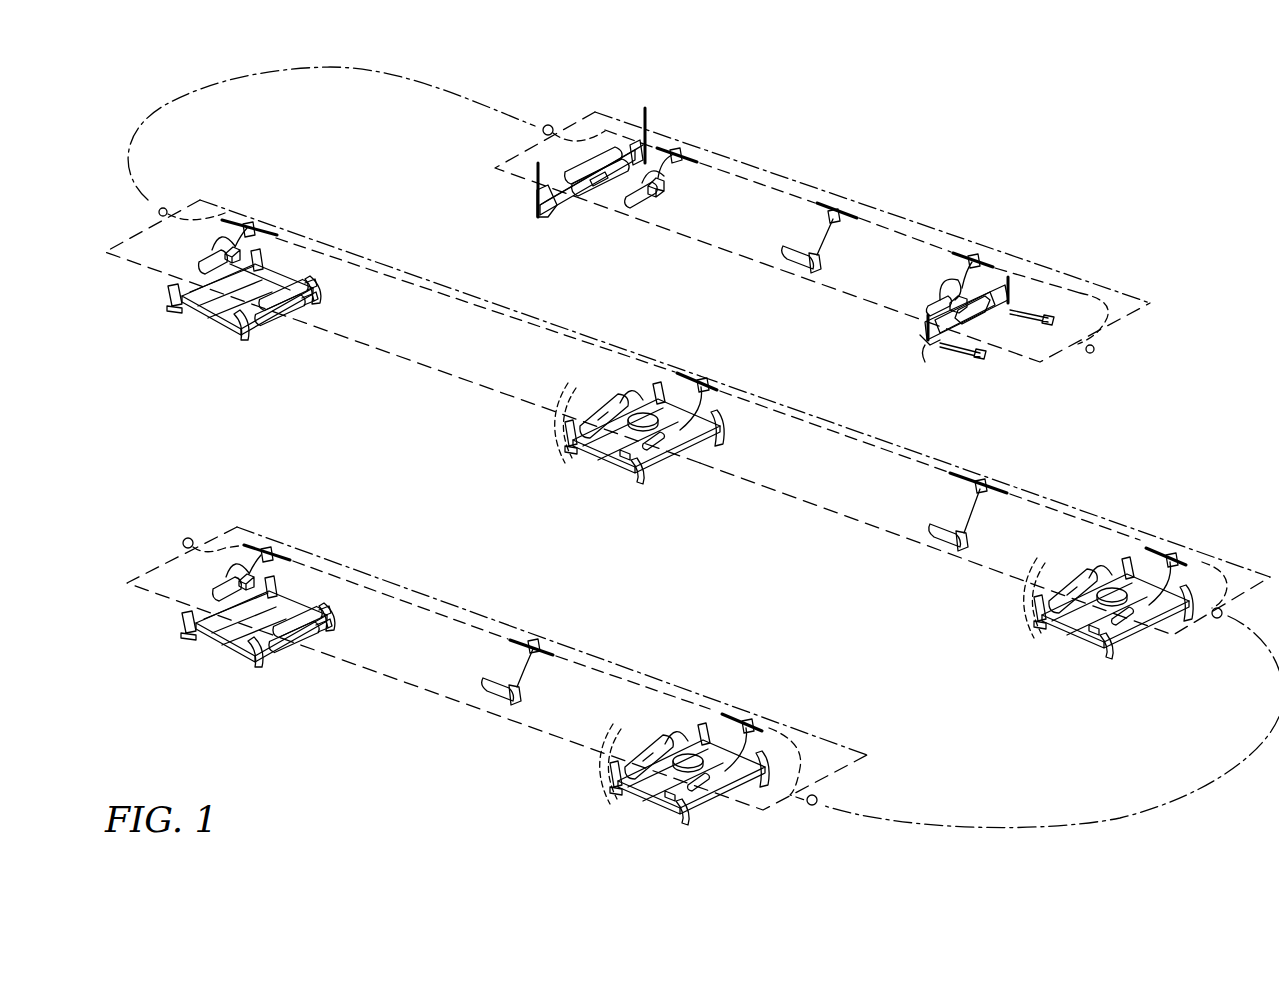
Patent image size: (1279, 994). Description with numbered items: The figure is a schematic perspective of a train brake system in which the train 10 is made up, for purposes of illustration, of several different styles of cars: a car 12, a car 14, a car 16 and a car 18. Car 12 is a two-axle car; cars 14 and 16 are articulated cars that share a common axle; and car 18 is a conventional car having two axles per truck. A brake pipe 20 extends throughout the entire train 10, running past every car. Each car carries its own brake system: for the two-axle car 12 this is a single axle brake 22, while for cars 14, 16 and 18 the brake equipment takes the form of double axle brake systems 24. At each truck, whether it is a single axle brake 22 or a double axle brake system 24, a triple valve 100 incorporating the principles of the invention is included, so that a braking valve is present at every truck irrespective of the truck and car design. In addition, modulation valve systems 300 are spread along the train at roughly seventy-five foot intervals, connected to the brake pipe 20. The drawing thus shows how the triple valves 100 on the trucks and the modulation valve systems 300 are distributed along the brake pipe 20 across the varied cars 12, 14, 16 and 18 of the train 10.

The train 10 is at (1020, 191).
The car 12 is at (733, 253).
The car 14 is at (573, 330).
The car 16 is at (810, 412).
The car 18 is at (600, 655).
The brake pipe 20 is at (150, 107).
The single axle brake 22 is at (538, 213).
The double axle brake system 24 is at (233, 323).
The triple valve 100 is at (212, 262).
The modulation valve system 300 is at (793, 253).